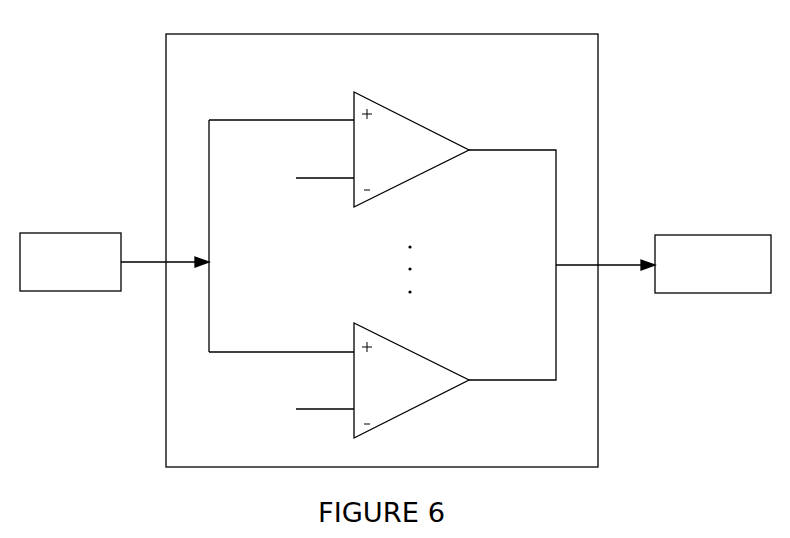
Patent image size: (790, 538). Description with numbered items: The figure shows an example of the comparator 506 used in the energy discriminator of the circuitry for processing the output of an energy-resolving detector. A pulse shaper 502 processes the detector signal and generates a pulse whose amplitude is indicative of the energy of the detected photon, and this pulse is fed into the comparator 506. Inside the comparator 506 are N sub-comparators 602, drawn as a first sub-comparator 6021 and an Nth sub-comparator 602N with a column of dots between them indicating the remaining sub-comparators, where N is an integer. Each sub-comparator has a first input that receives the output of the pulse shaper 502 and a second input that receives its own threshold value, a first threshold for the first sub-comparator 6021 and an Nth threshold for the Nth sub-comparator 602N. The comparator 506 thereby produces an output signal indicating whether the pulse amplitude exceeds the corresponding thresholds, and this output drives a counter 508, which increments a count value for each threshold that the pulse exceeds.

The pulse shaper 502 is at (70, 233).
The comparator 506 is at (382, 237).
The counter 508 is at (715, 235).
The sub-comparators 602 is at (424, 265).
The Nth sub-comparator 602N is at (425, 123).
The first sub-comparator 6021 is at (425, 353).